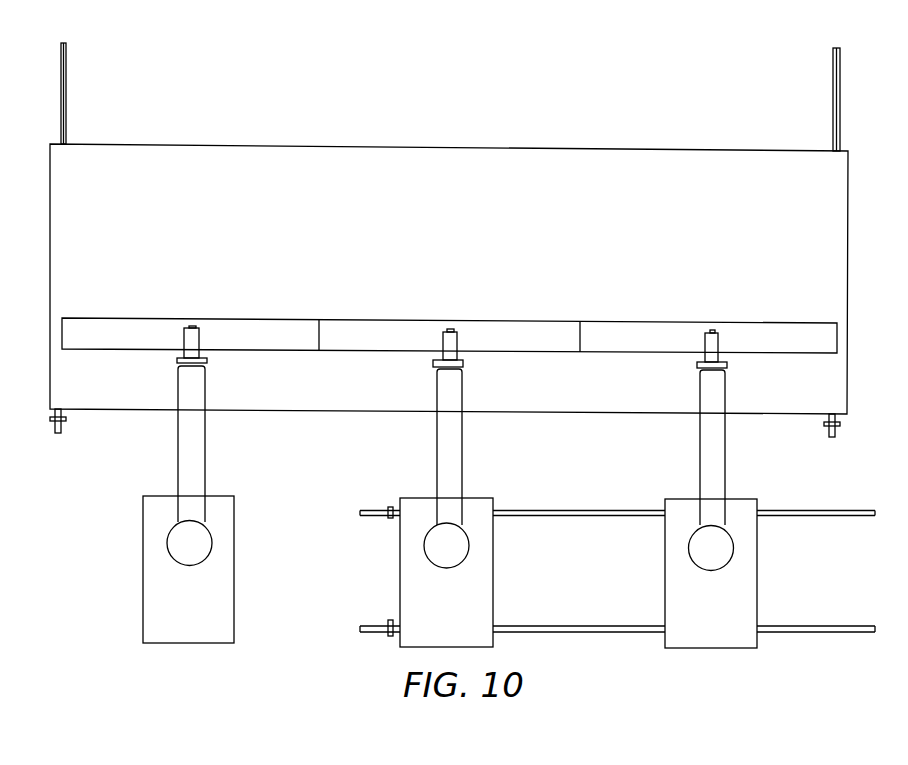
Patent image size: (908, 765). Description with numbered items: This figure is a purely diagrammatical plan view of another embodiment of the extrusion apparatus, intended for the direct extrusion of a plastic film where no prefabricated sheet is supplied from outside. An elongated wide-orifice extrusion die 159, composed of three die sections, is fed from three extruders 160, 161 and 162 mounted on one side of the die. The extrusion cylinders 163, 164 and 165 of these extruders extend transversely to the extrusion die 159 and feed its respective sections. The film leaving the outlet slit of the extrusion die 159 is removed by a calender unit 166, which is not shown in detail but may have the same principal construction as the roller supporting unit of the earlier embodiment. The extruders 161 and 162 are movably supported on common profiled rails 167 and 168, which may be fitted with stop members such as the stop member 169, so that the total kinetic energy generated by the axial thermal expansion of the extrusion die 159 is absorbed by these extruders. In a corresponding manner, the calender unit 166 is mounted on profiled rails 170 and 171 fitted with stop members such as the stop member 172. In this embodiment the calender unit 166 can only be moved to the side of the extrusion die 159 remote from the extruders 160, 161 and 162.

The extrusion die 159 is at (430, 320).
The extruder 160 is at (234, 570).
The extruder 161 is at (493, 575).
The extruder 162 is at (757, 575).
The extrusion cylinder 163 is at (205, 464).
The extrusion cylinder 164 is at (462, 467).
The extrusion cylinder 165 is at (725, 467).
The calender unit 166 is at (847, 232).
The profiled rail 167 is at (583, 510).
The profiled rail 168 is at (581, 625).
The stop member 169 is at (392, 507).
The profiled rail 170 is at (67, 107).
The profiled rail 171 is at (833, 112).
The stop member 172 is at (66, 419).